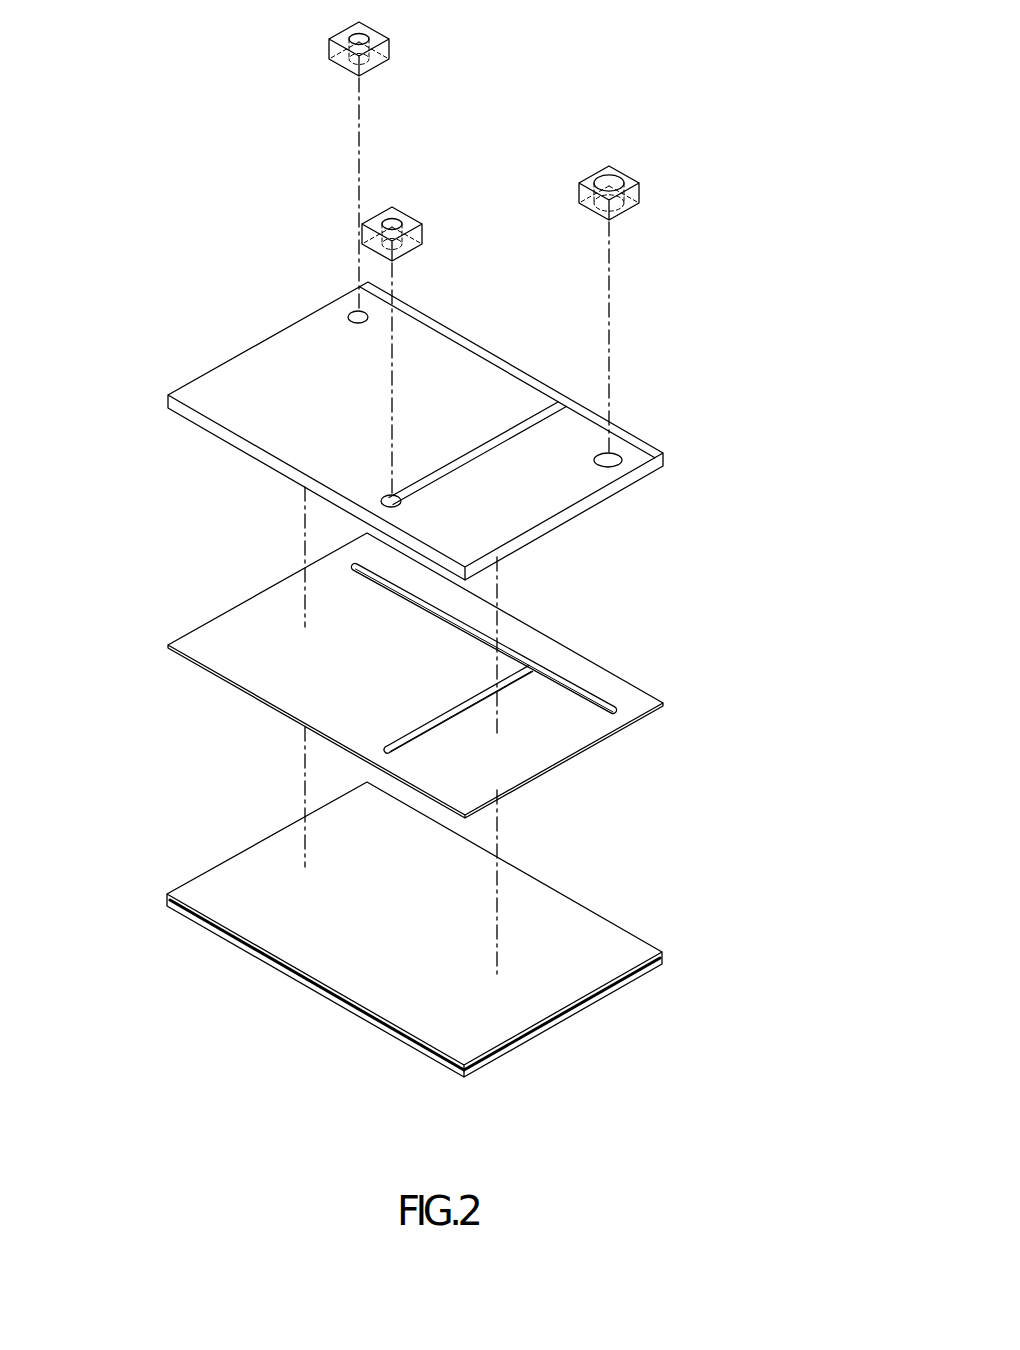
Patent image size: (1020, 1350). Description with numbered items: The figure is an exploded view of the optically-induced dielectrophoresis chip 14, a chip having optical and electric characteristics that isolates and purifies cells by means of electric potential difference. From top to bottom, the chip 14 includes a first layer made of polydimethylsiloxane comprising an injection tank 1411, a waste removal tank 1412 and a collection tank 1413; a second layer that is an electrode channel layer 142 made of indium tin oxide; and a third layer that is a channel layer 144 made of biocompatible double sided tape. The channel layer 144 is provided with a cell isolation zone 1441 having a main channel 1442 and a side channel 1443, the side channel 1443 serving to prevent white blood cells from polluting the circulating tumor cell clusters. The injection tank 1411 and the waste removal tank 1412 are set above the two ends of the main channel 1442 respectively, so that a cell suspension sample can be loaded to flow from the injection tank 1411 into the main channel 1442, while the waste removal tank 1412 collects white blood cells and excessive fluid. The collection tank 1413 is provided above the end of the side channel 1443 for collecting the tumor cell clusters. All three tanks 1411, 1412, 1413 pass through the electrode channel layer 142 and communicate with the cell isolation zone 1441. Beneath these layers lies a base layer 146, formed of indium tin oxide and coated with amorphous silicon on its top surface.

The optically-induced dielectrophoresis chip 14 is at (176, 300).
The injection tank 1411 is at (639, 190).
The waste removal tank 1412 is at (389, 42).
The collection tank 1413 is at (422, 229).
The electrode channel layer 142 is at (587, 502).
The channel layer 144 is at (469, 675).
The cell isolation zone 1441 is at (561, 658).
The main channel 1442 is at (503, 647).
The side channel 1443 is at (513, 680).
The base layer 146 is at (630, 980).